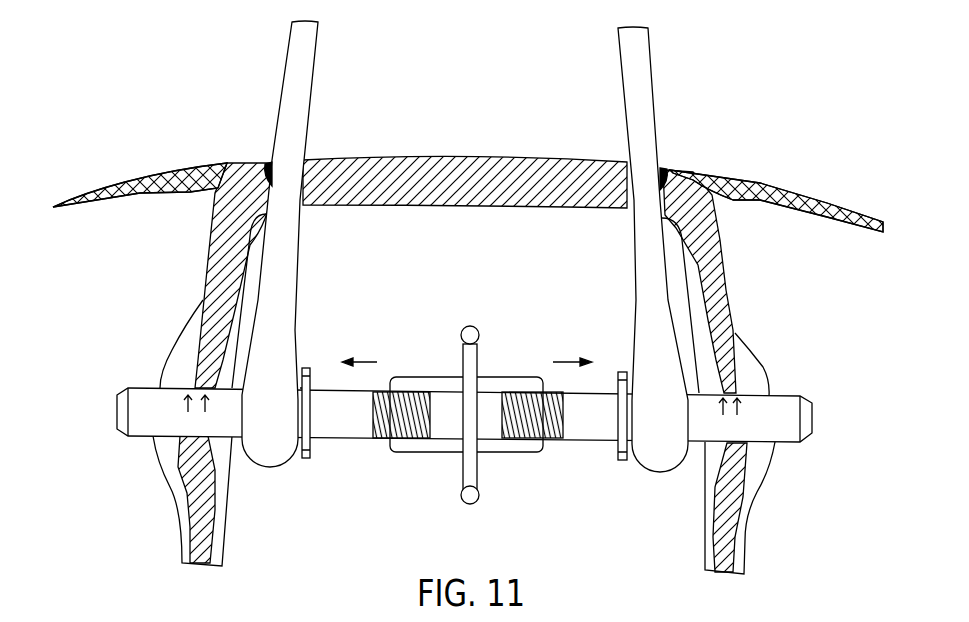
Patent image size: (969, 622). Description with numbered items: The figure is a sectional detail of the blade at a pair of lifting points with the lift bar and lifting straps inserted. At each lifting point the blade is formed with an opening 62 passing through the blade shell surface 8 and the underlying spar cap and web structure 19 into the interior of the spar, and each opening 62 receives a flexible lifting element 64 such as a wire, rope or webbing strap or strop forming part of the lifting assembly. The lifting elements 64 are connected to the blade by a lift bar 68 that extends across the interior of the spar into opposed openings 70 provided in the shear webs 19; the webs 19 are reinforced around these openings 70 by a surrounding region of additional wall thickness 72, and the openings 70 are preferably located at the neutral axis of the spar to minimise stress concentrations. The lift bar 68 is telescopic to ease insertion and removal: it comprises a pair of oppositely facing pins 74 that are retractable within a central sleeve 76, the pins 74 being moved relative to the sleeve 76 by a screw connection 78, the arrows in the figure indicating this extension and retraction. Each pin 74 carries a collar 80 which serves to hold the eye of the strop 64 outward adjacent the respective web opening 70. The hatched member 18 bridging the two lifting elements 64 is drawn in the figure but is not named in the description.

The blade shell surface 8 is at (155, 182).
The spar 18 is at (473, 170).
The shear web 19 is at (217, 267).
The opening 62 is at (272, 160).
The lifting element 64 is at (635, 102).
The lift bar 68 is at (338, 400).
The opening 70 is at (148, 436).
The region of additional wall thickness 72 is at (172, 367).
The pin 74 is at (222, 430).
The central sleeve 76 is at (510, 385).
The screw connection 78 is at (530, 430).
The collar 80 is at (305, 460).